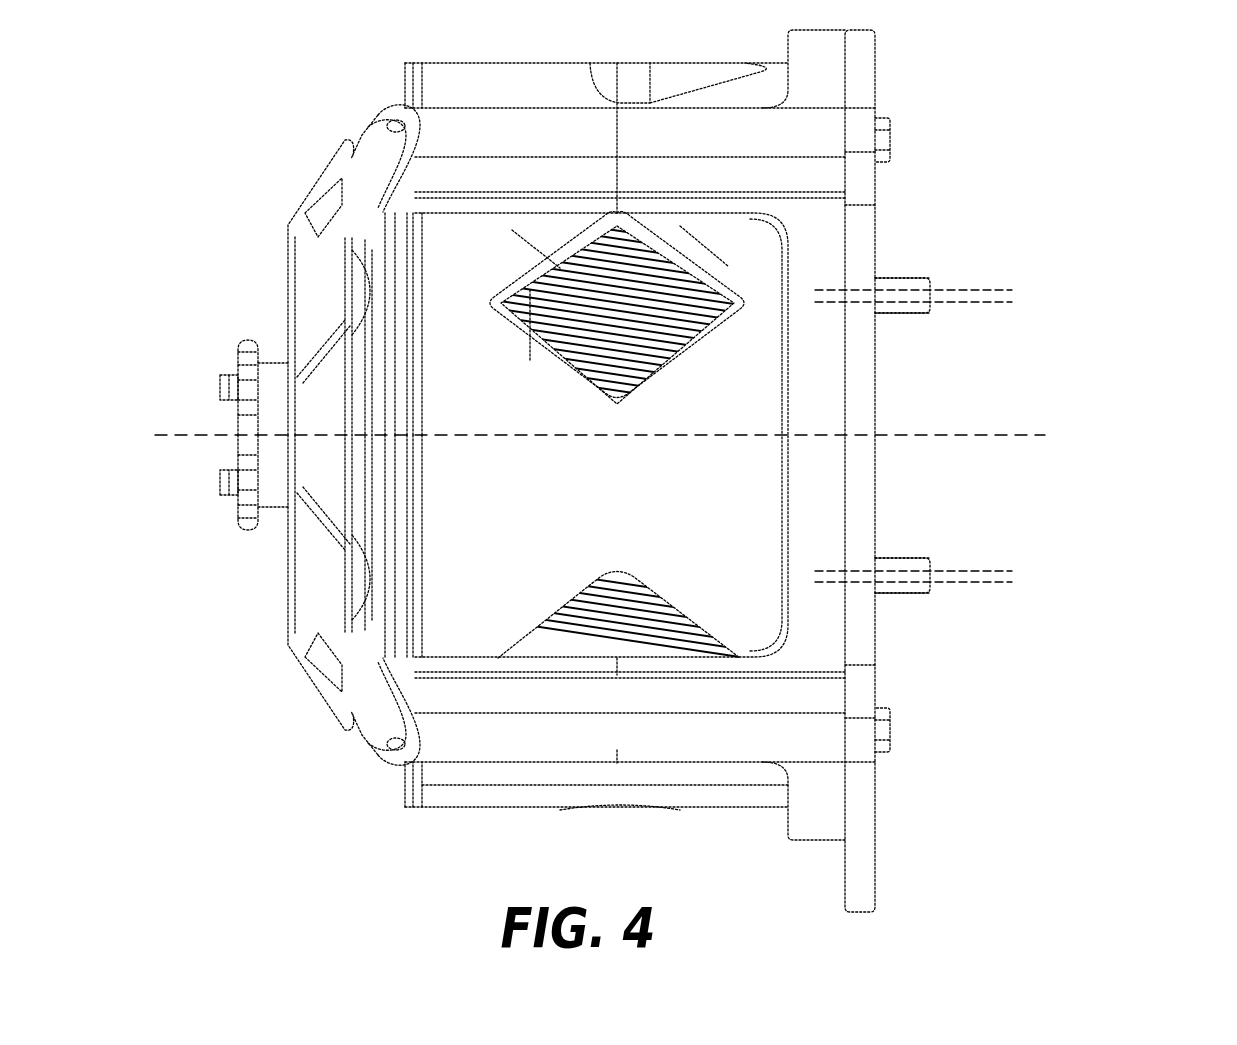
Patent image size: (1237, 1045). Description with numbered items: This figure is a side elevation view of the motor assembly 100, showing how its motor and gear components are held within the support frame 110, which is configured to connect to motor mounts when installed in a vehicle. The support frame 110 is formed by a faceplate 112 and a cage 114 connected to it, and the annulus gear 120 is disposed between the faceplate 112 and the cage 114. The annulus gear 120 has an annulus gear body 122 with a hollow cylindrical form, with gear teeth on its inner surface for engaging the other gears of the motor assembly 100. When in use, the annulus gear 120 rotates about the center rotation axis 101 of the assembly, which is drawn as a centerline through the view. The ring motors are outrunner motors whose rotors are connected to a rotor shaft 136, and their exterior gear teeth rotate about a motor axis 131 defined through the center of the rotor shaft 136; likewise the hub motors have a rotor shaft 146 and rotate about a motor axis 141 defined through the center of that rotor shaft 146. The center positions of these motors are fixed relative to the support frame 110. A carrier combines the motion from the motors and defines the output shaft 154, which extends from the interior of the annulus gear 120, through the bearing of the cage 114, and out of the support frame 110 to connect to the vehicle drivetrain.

The motor assembly 100 is at (671, 470).
The center rotation axis 101 is at (1045, 435).
The support frame 110 is at (888, 872).
The faceplate 112 is at (862, 824).
The cage 114 is at (372, 735).
The annulus gear 120 is at (583, 419).
The annulus gear body 122 is at (620, 435).
The motor axis 131 is at (1000, 290).
The rotor shaft 136 is at (940, 441).
The motor axis 141 is at (1000, 302).
The rotor shaft 146 is at (918, 268).
The output shaft 154 is at (243, 337).